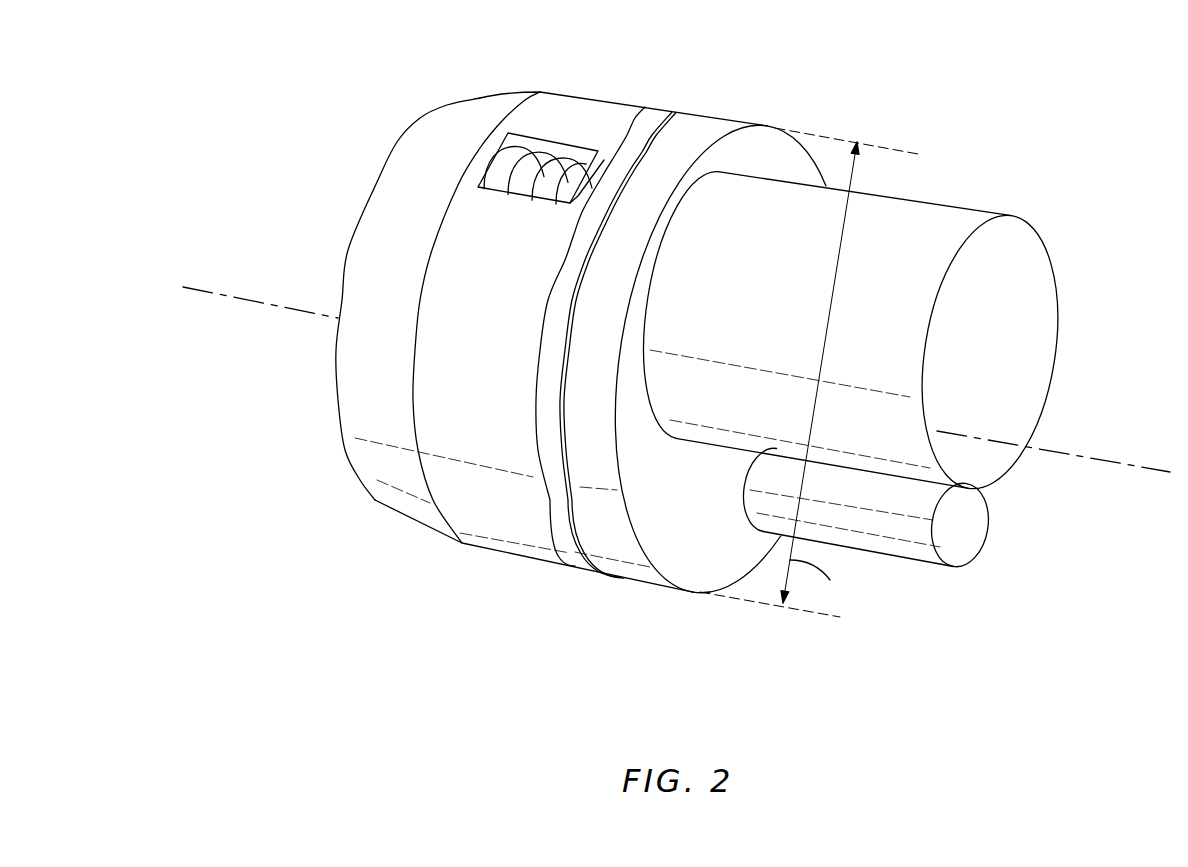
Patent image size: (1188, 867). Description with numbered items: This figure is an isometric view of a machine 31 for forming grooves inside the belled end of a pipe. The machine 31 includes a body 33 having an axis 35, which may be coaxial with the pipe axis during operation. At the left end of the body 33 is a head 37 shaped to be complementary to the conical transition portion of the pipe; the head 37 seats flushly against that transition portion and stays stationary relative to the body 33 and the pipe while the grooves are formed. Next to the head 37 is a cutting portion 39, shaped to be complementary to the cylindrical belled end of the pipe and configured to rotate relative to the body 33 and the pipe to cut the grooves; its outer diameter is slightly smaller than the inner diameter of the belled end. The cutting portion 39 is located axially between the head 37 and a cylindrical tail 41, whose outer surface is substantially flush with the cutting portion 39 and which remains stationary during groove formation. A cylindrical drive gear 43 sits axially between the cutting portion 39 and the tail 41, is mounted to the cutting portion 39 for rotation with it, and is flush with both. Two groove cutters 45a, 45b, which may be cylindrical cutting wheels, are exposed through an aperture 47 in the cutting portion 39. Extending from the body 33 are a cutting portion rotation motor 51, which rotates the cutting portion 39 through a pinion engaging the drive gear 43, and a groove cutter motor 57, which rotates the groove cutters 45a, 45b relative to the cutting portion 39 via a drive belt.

The machine 31 is at (1105, 92).
The body 33 is at (497, 567).
The axis 35 is at (203, 288).
The head 37 is at (378, 217).
The cutting portion 39 is at (640, 110).
The tail 41 is at (715, 132).
The drive gear 43 is at (673, 117).
The groove cutter 45a is at (503, 158).
The groove cutter 45b is at (540, 160).
The aperture 47 is at (578, 153).
The cutting portion rotation motor 51 is at (963, 535).
The groove cutter motor 57 is at (1037, 357).